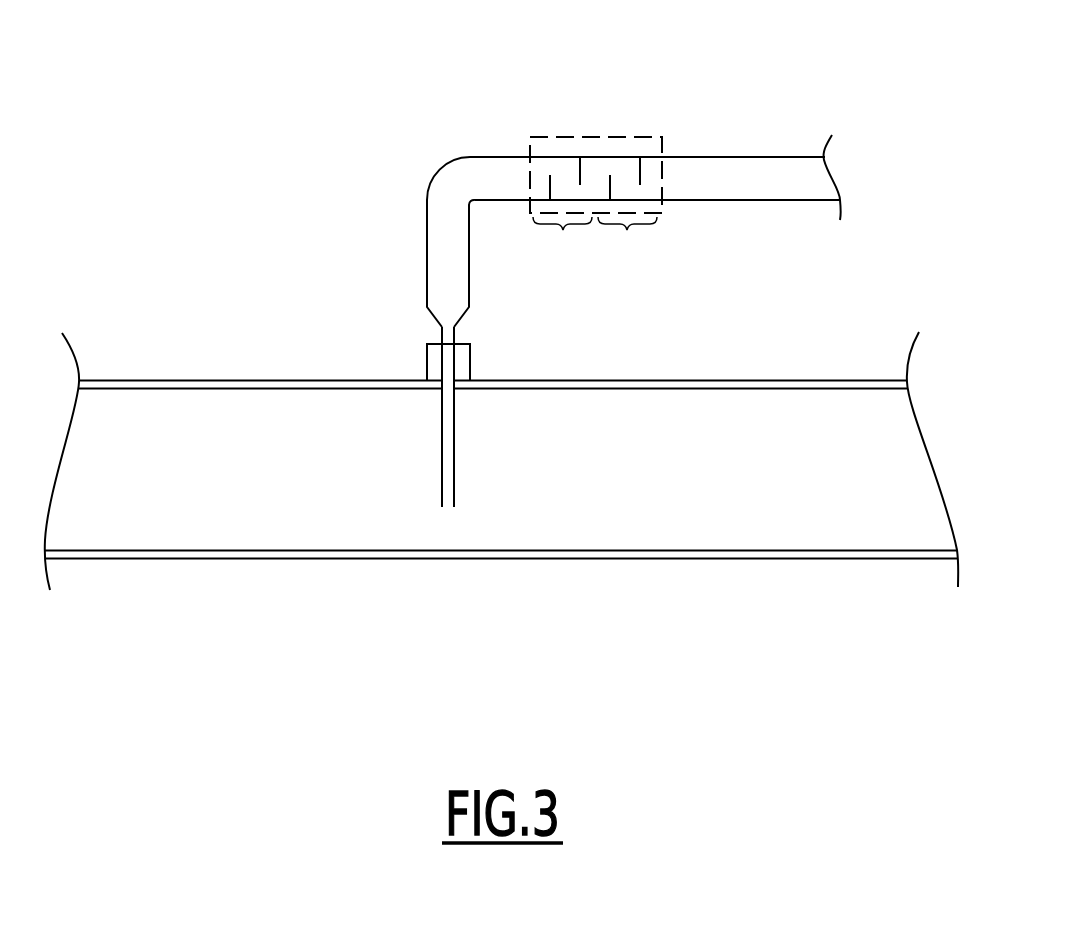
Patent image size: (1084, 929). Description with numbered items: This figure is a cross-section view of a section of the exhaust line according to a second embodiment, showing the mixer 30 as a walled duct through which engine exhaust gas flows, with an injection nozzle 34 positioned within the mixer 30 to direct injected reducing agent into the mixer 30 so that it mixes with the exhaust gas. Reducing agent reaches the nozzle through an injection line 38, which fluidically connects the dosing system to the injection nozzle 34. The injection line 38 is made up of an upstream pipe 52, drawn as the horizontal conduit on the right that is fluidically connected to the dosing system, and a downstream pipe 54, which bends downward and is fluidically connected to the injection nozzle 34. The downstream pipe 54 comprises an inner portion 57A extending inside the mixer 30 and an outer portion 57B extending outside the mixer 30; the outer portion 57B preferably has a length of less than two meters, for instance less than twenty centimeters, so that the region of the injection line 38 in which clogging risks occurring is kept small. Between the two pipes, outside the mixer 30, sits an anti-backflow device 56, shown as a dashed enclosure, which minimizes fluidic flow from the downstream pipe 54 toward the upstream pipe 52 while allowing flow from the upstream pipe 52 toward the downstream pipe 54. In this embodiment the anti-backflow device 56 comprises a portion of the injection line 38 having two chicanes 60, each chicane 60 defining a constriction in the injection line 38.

The mixer 30 is at (207, 507).
The injection nozzle 34 is at (452, 480).
The injection line 38 is at (605, 173).
The upstream pipe 52 is at (730, 188).
The downstream pipe 54 is at (437, 263).
The anti-backflow device 56 is at (570, 137).
The inner portion 57A is at (452, 436).
The outer portion 57B is at (450, 242).
The chicane 60 is at (595, 240).